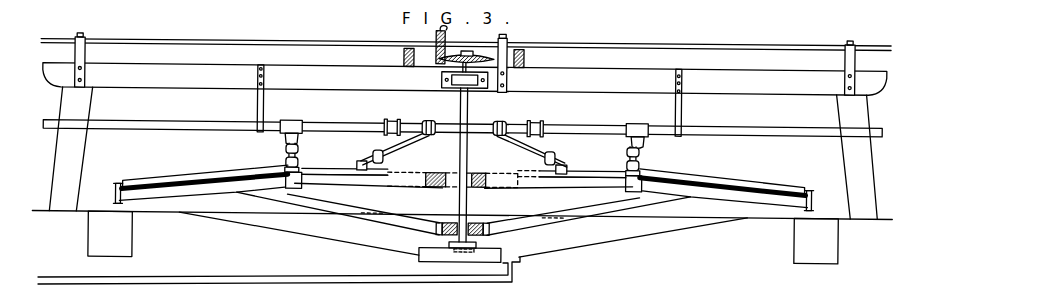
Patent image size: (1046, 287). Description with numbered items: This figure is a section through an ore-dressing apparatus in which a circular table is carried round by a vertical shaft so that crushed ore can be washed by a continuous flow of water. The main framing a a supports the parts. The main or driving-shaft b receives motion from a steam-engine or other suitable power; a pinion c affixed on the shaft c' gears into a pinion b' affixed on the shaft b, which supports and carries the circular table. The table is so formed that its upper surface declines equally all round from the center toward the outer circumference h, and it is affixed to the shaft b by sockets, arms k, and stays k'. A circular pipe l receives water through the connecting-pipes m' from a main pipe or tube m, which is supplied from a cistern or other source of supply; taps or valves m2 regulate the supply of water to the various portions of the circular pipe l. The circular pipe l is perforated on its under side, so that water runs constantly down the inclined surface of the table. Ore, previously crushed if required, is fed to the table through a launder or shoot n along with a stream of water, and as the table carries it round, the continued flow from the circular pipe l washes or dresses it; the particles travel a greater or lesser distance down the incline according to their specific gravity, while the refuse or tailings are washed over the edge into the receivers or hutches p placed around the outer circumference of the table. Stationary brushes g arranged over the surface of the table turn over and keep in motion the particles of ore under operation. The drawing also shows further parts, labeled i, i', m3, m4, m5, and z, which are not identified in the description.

The main framing a is at (464, 133).
The main or driving-shaft b is at (462, 152).
The pinion b' is at (466, 54).
The pinion c is at (445, 42).
The shaft c' is at (466, 38).
The stationary brushes g is at (463, 184).
The outer circumference h is at (461, 202).
The sliding nut i is at (453, 180).
The connecting bar i' is at (464, 170).
The arms k is at (464, 181).
The stays k' is at (463, 214).
The circular pipe l is at (464, 163).
The main pipe or tube m is at (462, 122).
The connecting-pipes m' is at (464, 134).
The taps or valves m2 is at (473, 157).
The diagonal pipes m3 is at (464, 148).
The pipe unions m4 is at (466, 122).
The pipe couplings m5 is at (462, 158).
The launder or shoot n is at (469, 58).
The receivers or hutches p is at (463, 237).
The base channel z is at (279, 270).